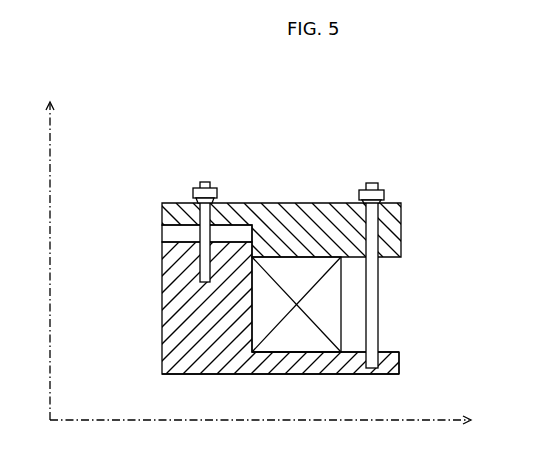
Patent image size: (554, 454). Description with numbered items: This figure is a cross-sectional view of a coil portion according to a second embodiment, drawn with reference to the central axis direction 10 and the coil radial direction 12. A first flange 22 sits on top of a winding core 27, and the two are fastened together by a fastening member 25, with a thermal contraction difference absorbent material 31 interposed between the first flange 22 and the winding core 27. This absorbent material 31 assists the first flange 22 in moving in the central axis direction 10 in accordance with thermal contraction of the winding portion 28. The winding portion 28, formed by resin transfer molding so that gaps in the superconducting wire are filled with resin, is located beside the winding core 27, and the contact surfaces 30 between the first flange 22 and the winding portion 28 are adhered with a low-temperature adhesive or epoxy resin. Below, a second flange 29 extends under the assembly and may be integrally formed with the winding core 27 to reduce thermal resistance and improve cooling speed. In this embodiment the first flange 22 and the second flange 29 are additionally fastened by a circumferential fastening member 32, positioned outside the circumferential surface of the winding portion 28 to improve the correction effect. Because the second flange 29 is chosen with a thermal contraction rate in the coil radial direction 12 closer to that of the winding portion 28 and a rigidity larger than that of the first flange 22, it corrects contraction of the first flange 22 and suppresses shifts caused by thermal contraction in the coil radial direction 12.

The central axis direction 10 is at (41, 249).
The coil radial direction 12 is at (275, 419).
The first flange 22 is at (401, 214).
The fastening member 25 is at (193, 190).
The winding core 27 is at (180, 317).
The winding portion 28 is at (326, 317).
The second flange 29 is at (300, 370).
The contact surfaces 30 is at (300, 260).
The thermal contraction difference absorbent material 31 is at (168, 238).
The circumferential fastening member 32 is at (380, 187).